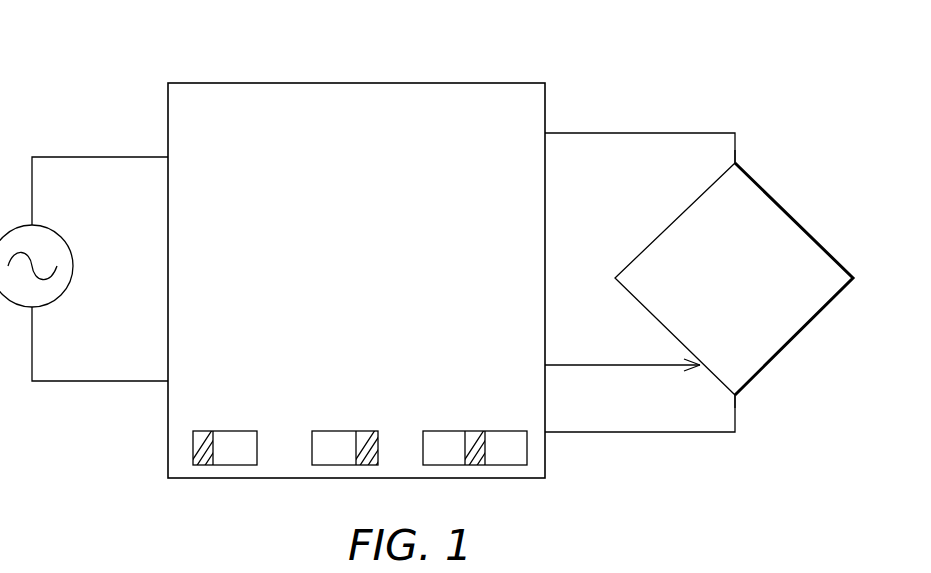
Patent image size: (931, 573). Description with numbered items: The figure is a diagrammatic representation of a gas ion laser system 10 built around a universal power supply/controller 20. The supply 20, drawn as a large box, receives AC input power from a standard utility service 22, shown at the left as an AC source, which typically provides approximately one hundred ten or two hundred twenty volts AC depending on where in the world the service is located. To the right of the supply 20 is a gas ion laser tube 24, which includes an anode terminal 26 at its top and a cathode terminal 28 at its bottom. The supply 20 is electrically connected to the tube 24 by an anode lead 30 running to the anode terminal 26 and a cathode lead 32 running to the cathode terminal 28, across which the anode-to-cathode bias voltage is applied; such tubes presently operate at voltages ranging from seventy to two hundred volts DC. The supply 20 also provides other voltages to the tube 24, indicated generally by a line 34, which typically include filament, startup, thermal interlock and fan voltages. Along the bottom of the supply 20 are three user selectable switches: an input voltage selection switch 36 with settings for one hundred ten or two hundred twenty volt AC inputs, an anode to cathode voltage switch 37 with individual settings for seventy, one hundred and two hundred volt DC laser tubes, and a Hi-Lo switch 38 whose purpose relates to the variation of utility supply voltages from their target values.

The gas ion laser system 10 is at (582, 55).
The universal power supply/controller 20 is at (277, 82).
The utility service 22 is at (68, 247).
The gas ion laser tube 24 is at (815, 317).
The anode terminal 26 is at (737, 162).
The cathode terminal 28 is at (738, 398).
The anode lead 30 is at (663, 133).
The cathode lead 32 is at (617, 432).
The line 34 is at (645, 365).
The input voltage selection switch 36 is at (193, 452).
The anode to cathode voltage switch 37 is at (478, 467).
The Hi-Lo switch 38 is at (345, 467).